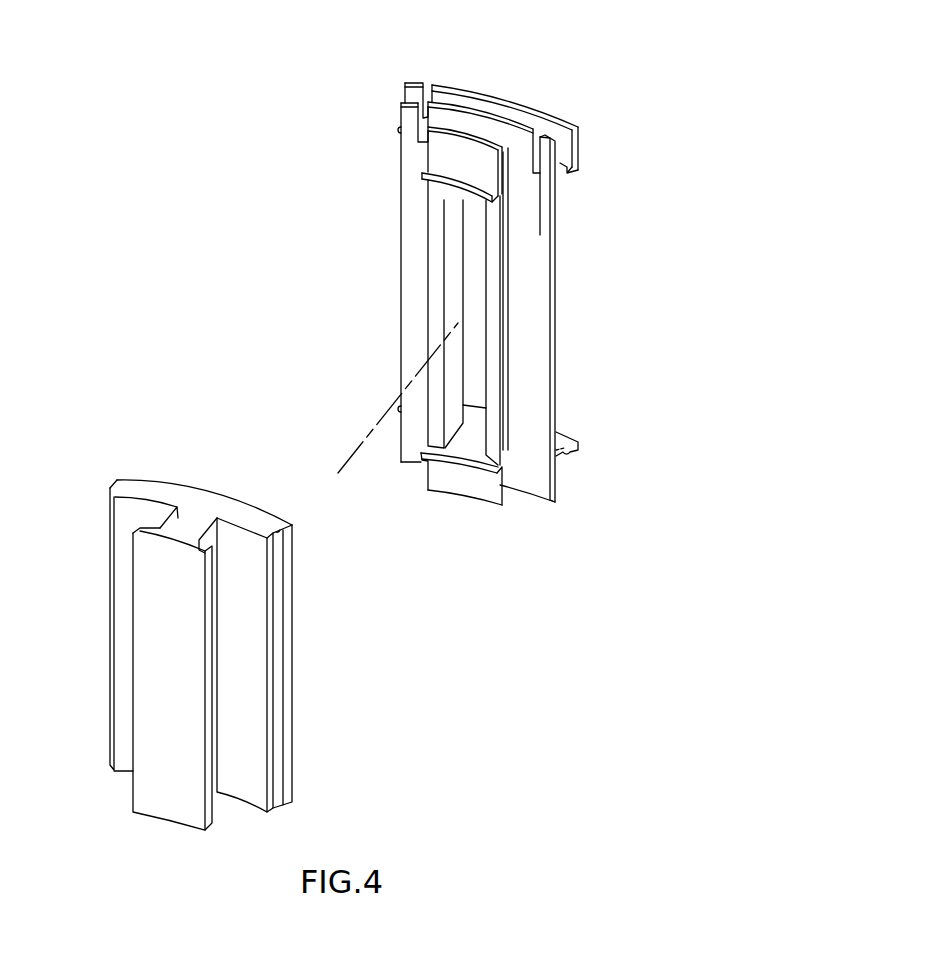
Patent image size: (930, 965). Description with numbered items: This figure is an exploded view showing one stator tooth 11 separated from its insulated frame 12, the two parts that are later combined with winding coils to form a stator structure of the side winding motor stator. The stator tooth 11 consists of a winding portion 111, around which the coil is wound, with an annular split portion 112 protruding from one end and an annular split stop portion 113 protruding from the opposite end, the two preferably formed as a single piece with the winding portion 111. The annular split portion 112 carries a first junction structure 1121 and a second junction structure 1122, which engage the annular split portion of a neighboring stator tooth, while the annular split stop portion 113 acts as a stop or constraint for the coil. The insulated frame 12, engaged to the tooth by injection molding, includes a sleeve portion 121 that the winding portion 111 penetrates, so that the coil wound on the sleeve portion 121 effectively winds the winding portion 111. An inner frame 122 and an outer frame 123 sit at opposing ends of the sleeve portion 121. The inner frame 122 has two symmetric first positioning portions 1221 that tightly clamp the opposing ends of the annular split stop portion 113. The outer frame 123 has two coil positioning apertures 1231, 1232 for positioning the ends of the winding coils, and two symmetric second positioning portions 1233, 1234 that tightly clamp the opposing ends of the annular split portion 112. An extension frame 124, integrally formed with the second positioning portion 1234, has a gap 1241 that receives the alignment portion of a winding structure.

The stator tooth 11 is at (170, 458).
The winding portion 111 is at (177, 516).
The annular split portion 112 is at (236, 500).
The annular split stop portion 113 is at (143, 529).
The first junction structure 1121 is at (100, 479).
The second junction structure 1122 is at (289, 579).
The insulated frame 12 is at (387, 90).
The sleeve portion 121 is at (508, 265).
The inner frame 122 is at (470, 123).
The first positioning portion 1221 is at (421, 177).
The outer frame 123 is at (530, 119).
The coil positioning aperture 1231 is at (420, 157).
The coil positioning aperture 1232 is at (538, 188).
The second positioning portion 1233 is at (572, 440).
The second positioning portion 1234 is at (574, 184).
The extension frame 124 is at (572, 113).
The gap 1241 is at (428, 76).